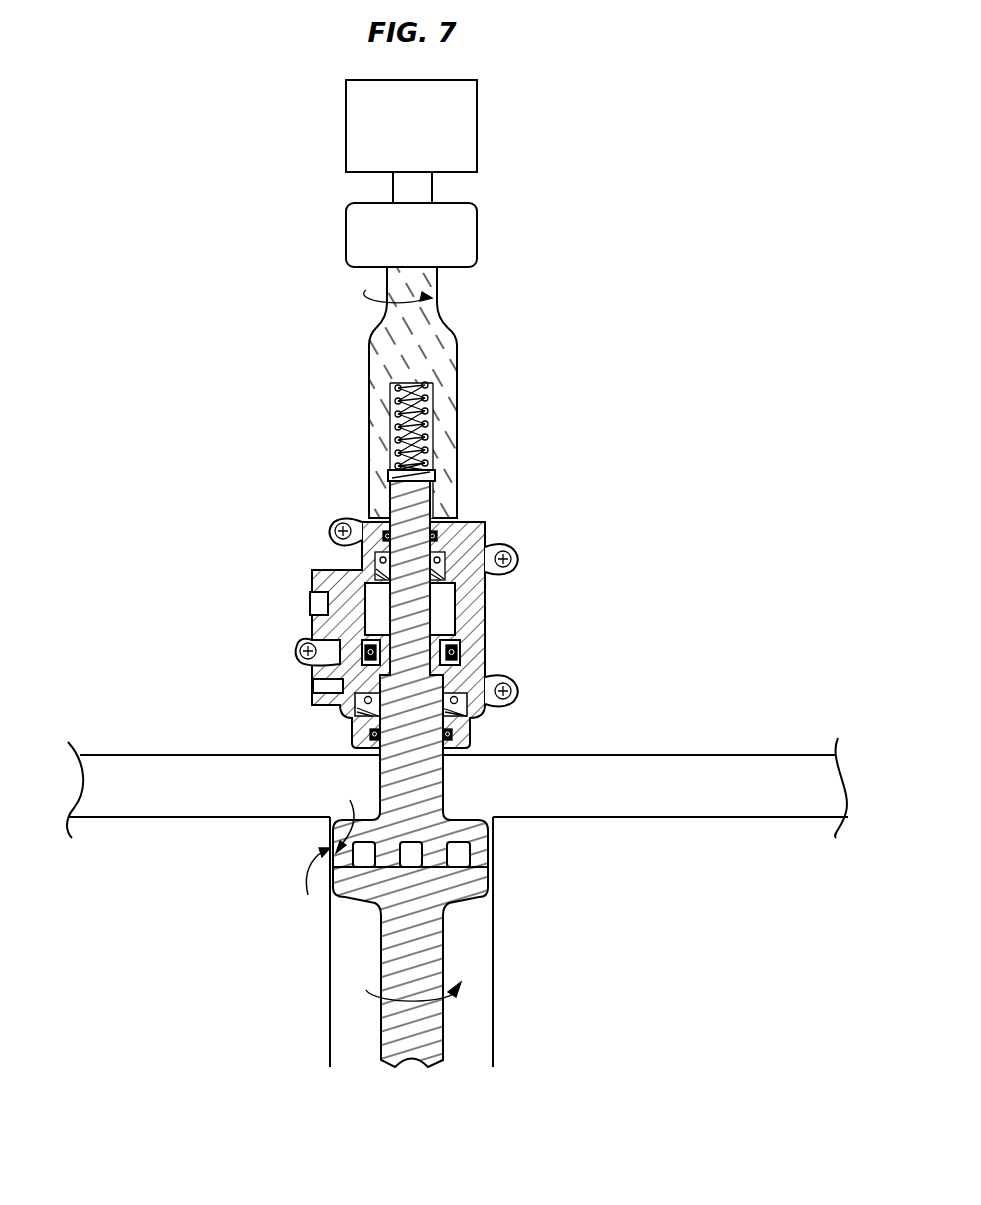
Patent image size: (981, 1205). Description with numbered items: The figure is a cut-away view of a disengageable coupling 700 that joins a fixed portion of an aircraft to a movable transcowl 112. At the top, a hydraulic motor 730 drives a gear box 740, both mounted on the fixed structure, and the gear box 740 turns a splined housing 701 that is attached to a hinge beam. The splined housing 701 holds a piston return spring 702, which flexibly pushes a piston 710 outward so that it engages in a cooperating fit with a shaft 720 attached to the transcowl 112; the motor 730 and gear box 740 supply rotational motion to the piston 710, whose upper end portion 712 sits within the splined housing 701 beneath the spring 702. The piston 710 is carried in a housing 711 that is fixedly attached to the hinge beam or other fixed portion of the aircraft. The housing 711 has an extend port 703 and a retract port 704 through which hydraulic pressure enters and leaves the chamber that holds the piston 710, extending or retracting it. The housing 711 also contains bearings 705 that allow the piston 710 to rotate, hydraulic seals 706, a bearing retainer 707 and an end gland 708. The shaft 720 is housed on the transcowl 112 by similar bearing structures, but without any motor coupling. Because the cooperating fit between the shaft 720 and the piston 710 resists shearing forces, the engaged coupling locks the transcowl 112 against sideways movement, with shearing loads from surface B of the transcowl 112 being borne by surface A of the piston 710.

The disengageable coupling 700 is at (638, 136).
The hydraulic motor 730 is at (346, 128).
The gear box 740 is at (477, 235).
The splined housing 701 is at (457, 395).
The piston return spring 702 is at (395, 416).
The screw shaft end 712 is at (390, 492).
The housing 711 is at (458, 525).
The piston 710 is at (480, 635).
The bearing retainer 707 is at (455, 580).
The bearings 705 is at (490, 676).
The end gland 708 is at (466, 732).
The extend port 703 is at (310, 603).
The retract port 704 is at (313, 688).
The hydraulic seals 706 is at (360, 530).
The shaft 720 is at (433, 938).
The transcowl 112 is at (652, 817).